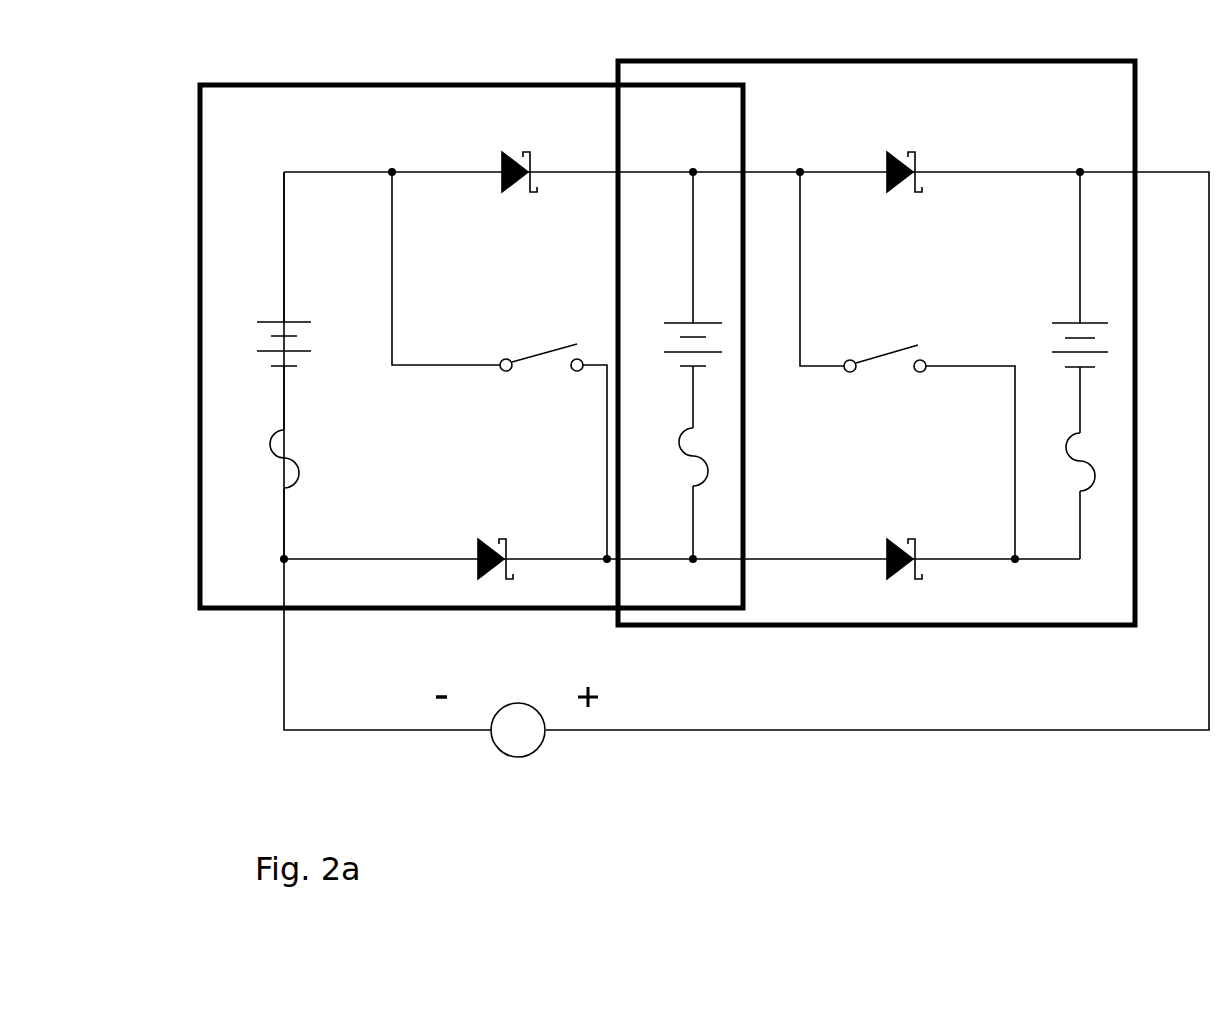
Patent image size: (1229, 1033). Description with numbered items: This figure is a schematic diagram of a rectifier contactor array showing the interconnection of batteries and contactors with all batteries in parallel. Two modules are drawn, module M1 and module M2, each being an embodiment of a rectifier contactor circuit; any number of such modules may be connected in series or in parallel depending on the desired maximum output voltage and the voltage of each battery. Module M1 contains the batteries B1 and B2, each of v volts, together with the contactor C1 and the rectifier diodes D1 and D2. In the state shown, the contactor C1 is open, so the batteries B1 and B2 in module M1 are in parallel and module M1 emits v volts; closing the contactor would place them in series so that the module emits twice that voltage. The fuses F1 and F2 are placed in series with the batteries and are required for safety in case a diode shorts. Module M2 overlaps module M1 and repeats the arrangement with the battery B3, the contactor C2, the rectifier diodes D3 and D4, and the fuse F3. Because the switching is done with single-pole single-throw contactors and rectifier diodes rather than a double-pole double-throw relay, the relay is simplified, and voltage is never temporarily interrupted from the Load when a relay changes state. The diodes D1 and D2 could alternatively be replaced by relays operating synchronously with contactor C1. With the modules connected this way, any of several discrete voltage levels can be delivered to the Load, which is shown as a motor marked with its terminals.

The module M1 is at (471, 330).
The module M2 is at (876, 324).
The battery B1 is at (259, 301).
The battery B2 is at (672, 300).
The battery B3 is at (1060, 302).
The contactor C1 is at (499, 365).
The contactor C2 is at (907, 365).
The rectifier diode D1 is at (521, 152).
The rectifier diode D2 is at (498, 539).
The rectifier diode D3 is at (907, 152).
The rectifier diode D4 is at (906, 540).
The fuse F1 is at (258, 494).
The fuse F2 is at (672, 493).
The fuse F3 is at (1065, 496).
The load Load is at (517, 734).